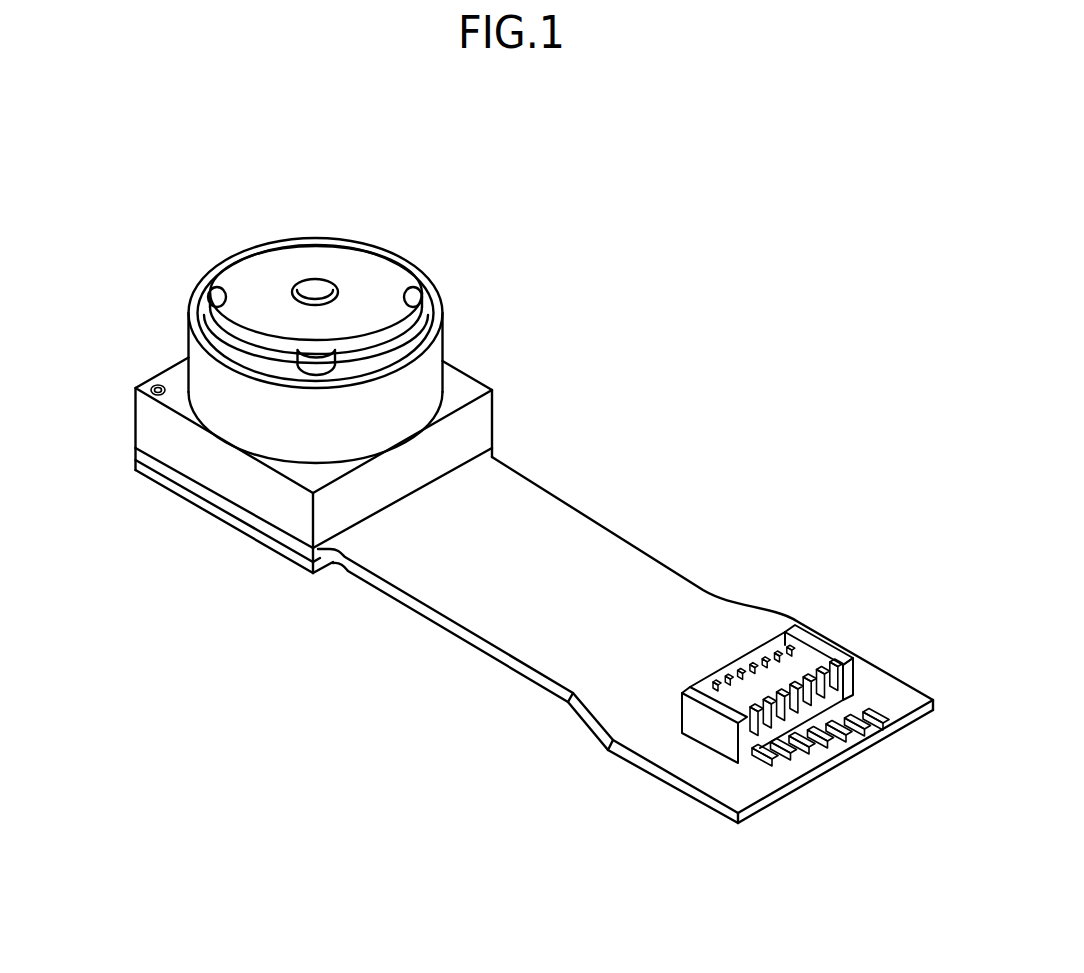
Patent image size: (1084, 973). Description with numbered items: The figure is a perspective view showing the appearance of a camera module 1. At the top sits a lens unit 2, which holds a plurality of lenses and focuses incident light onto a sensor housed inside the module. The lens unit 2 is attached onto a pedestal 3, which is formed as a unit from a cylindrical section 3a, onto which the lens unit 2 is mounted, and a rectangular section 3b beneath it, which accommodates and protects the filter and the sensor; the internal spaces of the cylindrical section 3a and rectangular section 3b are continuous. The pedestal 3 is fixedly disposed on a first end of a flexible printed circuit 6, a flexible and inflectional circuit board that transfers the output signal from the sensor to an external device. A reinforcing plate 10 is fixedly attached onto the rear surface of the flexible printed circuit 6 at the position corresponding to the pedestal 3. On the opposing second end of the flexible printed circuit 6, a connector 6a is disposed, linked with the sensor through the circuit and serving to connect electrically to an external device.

The camera module 1 is at (742, 222).
The lens unit 2 is at (357, 258).
The pedestal 3 is at (592, 257).
The cylindrical section 3a is at (443, 337).
The rectangular section 3b is at (492, 406).
The flexible printed circuit 6 is at (640, 545).
The connector 6a is at (710, 727).
The reinforcing plate 10 is at (170, 492).